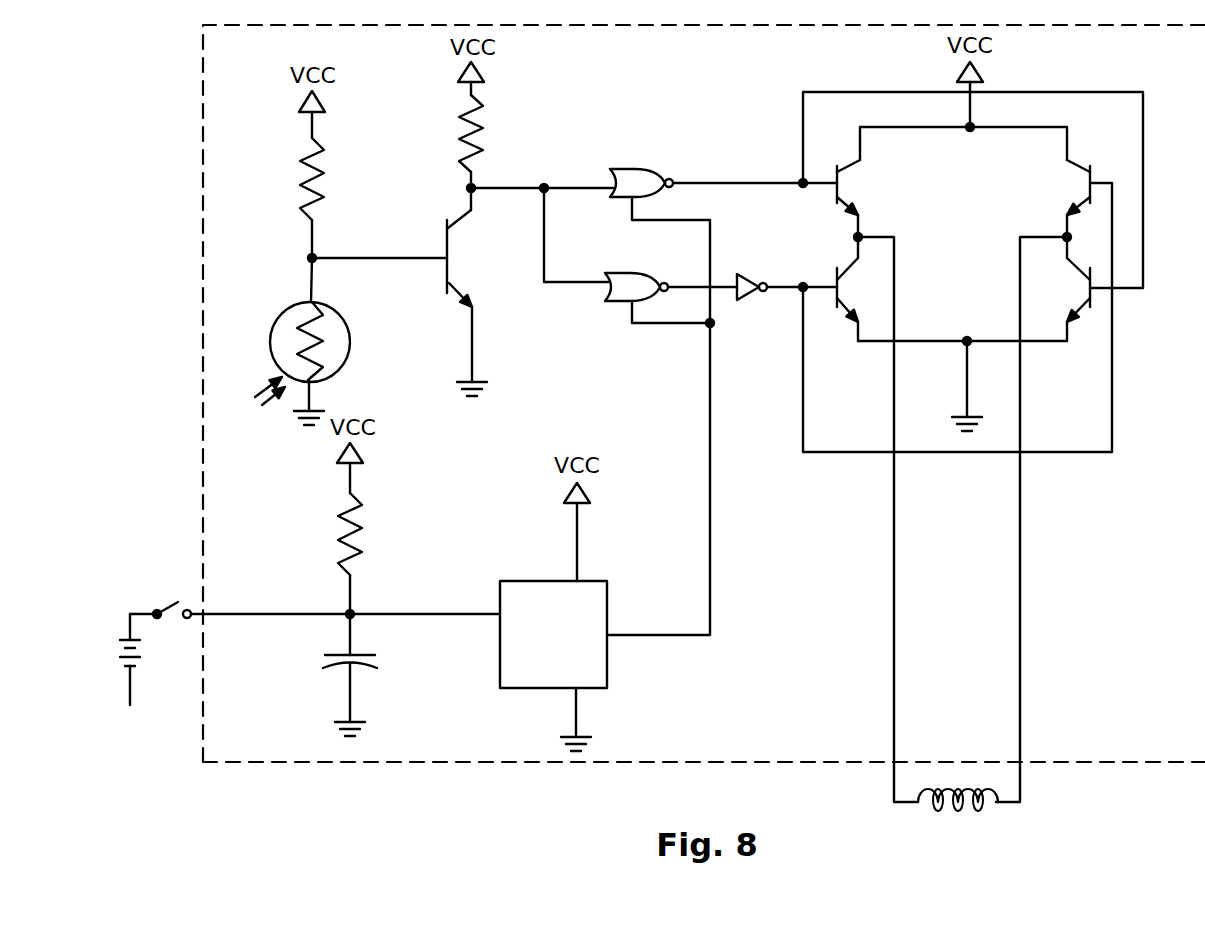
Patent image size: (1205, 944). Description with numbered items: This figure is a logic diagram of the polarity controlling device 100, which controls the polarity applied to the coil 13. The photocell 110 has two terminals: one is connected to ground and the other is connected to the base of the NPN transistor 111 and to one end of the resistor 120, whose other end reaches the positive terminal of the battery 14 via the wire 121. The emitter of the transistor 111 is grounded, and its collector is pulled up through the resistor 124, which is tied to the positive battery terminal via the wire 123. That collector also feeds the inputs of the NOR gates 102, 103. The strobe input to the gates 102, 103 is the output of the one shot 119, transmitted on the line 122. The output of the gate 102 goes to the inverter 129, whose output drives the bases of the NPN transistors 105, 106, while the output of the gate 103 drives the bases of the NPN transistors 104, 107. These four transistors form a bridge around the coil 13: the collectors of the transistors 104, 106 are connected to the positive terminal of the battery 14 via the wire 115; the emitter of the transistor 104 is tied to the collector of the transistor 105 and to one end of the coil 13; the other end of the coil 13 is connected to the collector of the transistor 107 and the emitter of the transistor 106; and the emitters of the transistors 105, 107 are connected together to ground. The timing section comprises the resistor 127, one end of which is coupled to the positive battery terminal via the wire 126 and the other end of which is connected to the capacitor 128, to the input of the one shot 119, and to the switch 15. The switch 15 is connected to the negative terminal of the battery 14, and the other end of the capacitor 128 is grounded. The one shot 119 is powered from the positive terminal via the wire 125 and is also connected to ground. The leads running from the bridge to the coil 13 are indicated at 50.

The coil 13 is at (958, 778).
The battery 14 is at (134, 682).
The switch 15 is at (178, 600).
The motor leads 50 is at (892, 790).
The polarity controlling device 100 is at (437, 738).
The NOR gate 102 is at (607, 300).
The NOR gate 103 is at (635, 170).
The NPN transistor 104 is at (845, 185).
The NPN transistor 105 is at (835, 283).
The NPN transistor 106 is at (1088, 190).
The NPN transistor 107 is at (1092, 295).
The photocell 110 is at (342, 308).
The NPN transistor 111 is at (449, 262).
The wire 115 is at (958, 108).
The one shot 119 is at (600, 596).
The resistor 120 is at (300, 193).
The wire 121 is at (298, 129).
The line 122 is at (702, 424).
The wire 123 is at (470, 98).
The resistor 124 is at (478, 122).
The wire 125 is at (572, 537).
The wire 126 is at (336, 484).
The resistor 127 is at (338, 540).
The capacitor 128 is at (370, 660).
The inverter 129 is at (749, 275).